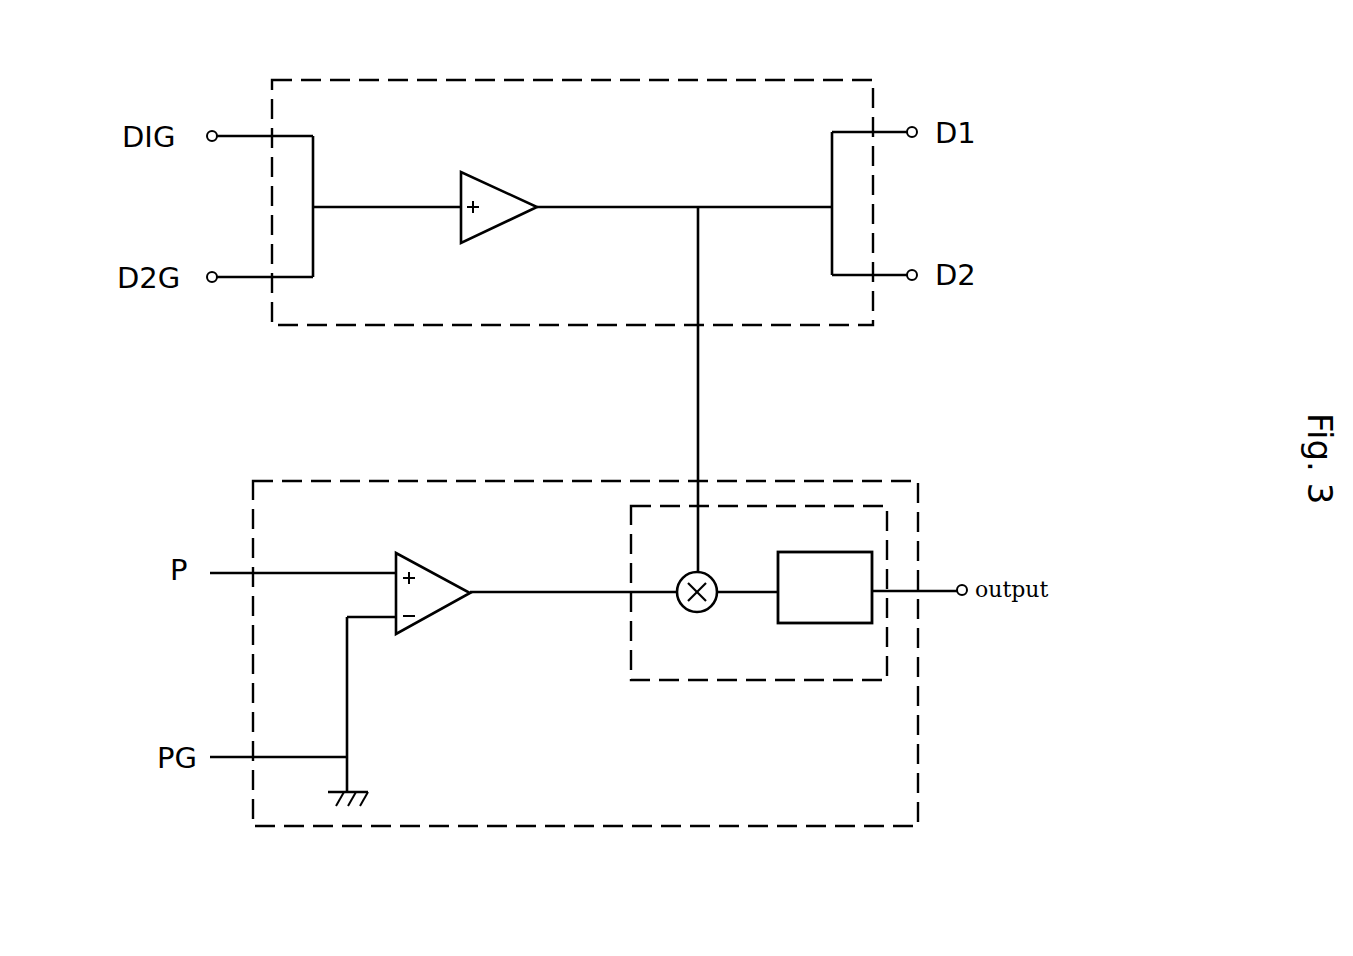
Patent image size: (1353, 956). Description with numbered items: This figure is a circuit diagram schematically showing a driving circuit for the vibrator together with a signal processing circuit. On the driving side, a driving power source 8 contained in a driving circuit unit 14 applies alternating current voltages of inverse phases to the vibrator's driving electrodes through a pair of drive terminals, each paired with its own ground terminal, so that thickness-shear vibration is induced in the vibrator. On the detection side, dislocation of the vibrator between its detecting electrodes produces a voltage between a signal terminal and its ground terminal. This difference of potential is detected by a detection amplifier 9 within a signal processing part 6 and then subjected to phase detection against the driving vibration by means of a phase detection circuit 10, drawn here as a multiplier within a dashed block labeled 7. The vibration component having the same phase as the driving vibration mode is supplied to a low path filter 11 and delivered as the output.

The driving circuit unit 14 is at (572, 179).
The driving power source 8 is at (495, 197).
The signal processing part 6 is at (625, 628).
The phase detection circuit 7 is at (754, 622).
The detection amplifier 9 is at (437, 585).
The phase detection circuit 10 is at (713, 607).
The low path filter 11 is at (857, 555).